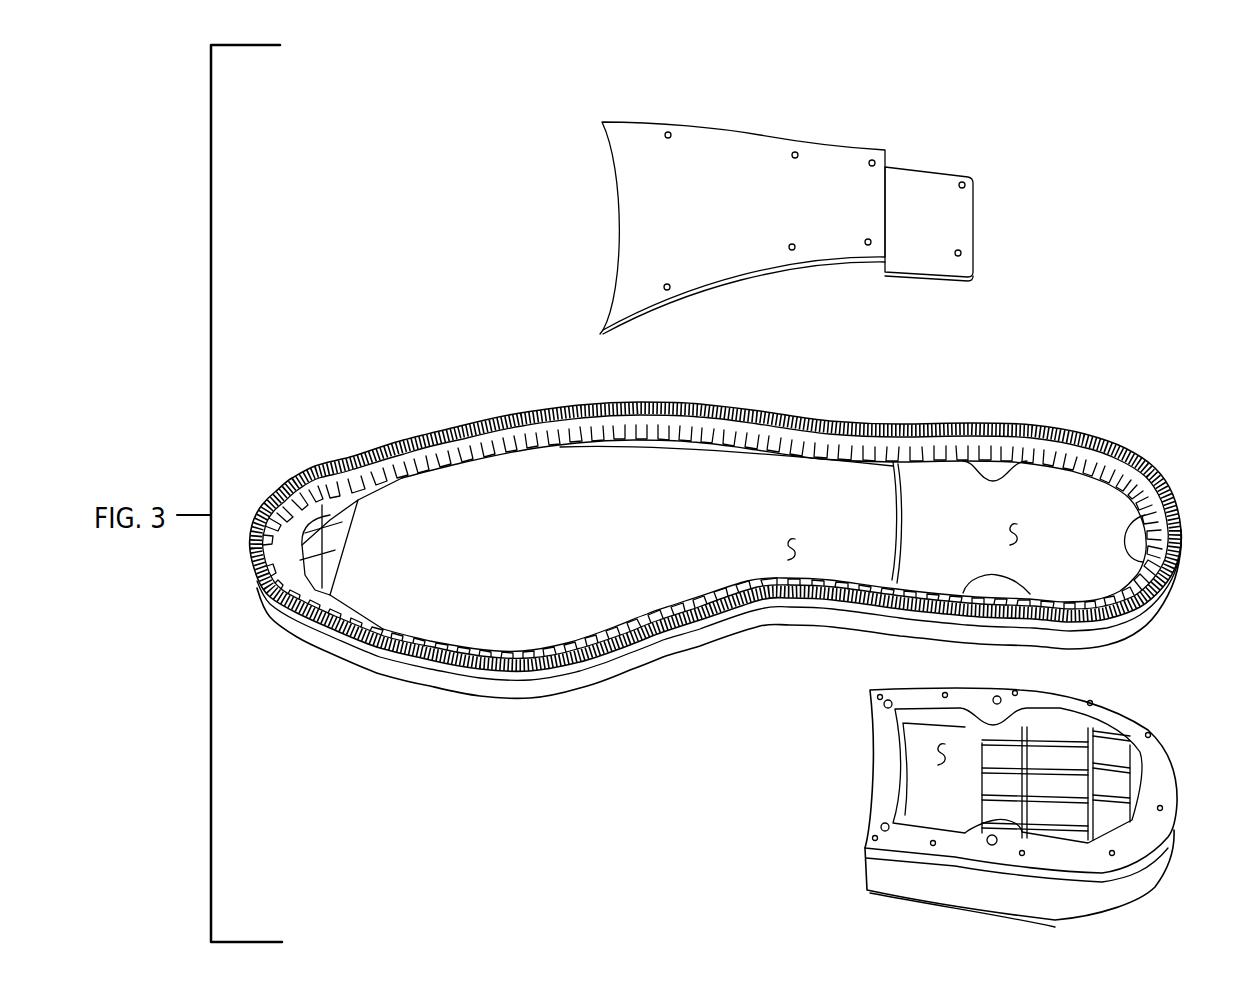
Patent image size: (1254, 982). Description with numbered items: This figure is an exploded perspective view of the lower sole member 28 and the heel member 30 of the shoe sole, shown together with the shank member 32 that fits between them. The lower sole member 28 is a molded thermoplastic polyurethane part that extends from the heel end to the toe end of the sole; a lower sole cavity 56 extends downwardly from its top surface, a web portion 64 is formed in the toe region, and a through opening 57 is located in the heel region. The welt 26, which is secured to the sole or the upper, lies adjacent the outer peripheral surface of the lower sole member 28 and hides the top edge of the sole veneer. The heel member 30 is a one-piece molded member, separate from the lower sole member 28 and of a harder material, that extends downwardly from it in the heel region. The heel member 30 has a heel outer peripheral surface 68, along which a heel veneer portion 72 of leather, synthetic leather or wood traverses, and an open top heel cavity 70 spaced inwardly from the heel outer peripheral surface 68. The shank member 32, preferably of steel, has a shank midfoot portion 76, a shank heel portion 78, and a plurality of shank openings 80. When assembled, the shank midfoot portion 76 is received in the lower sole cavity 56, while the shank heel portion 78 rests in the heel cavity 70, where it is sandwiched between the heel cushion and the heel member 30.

The welt 26 is at (705, 550).
The lower sole member 28 is at (640, 675).
The heel member 30 is at (1033, 808).
The shank member 32 is at (786, 226).
The lower sole cavity 56 is at (783, 547).
The through opening 57 is at (1017, 537).
The web portion 64 is at (340, 505).
The heel outer peripheral surface 68 is at (872, 735).
The open top heel cavity 70 is at (942, 760).
The heel veneer portion 72 is at (870, 803).
The shank midfoot portion 76 is at (740, 152).
The shank heel portion 78 is at (935, 232).
The shank openings 80 is at (666, 137).